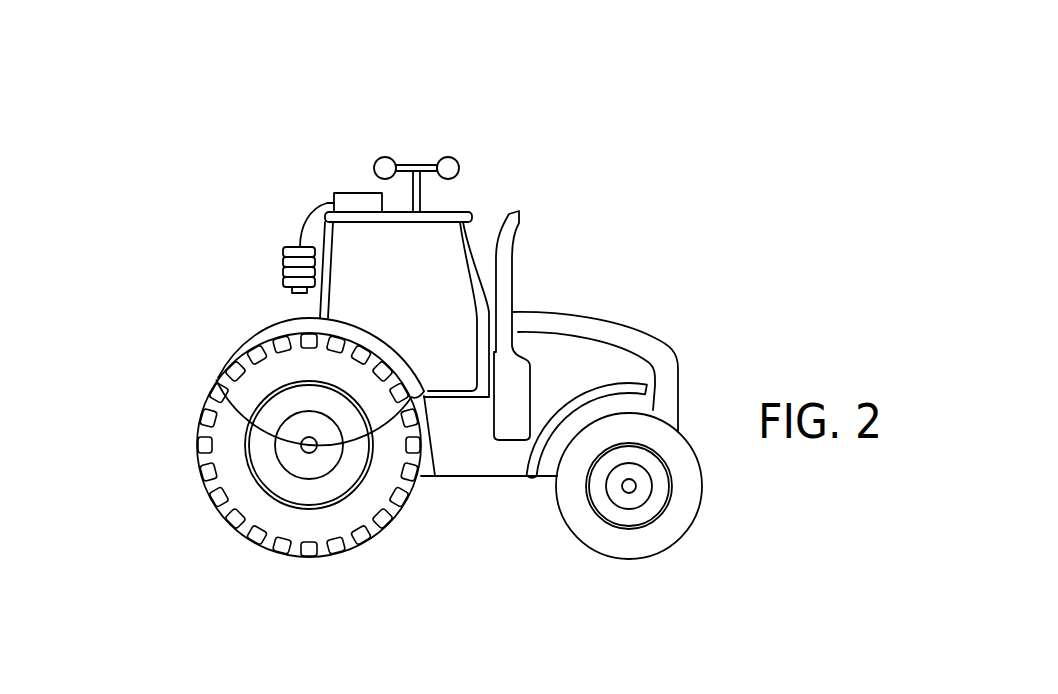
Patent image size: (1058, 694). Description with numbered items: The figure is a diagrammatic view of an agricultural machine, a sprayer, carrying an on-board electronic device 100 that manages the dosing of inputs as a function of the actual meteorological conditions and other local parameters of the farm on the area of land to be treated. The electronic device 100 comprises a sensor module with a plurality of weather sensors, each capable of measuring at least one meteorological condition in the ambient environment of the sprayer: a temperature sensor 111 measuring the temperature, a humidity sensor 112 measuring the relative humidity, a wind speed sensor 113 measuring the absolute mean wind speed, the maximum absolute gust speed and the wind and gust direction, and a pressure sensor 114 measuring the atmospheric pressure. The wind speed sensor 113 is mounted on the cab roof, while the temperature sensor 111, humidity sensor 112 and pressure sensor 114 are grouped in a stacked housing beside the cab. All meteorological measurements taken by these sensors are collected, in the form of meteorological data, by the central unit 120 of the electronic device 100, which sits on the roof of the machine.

The electronic device 100 is at (266, 207).
The temperature sensor 111 is at (192, 258).
The humidity sensor 112 is at (192, 258).
The wind speed sensor 113 is at (425, 167).
The pressure sensor 114 is at (282, 260).
The central unit 120 is at (357, 192).